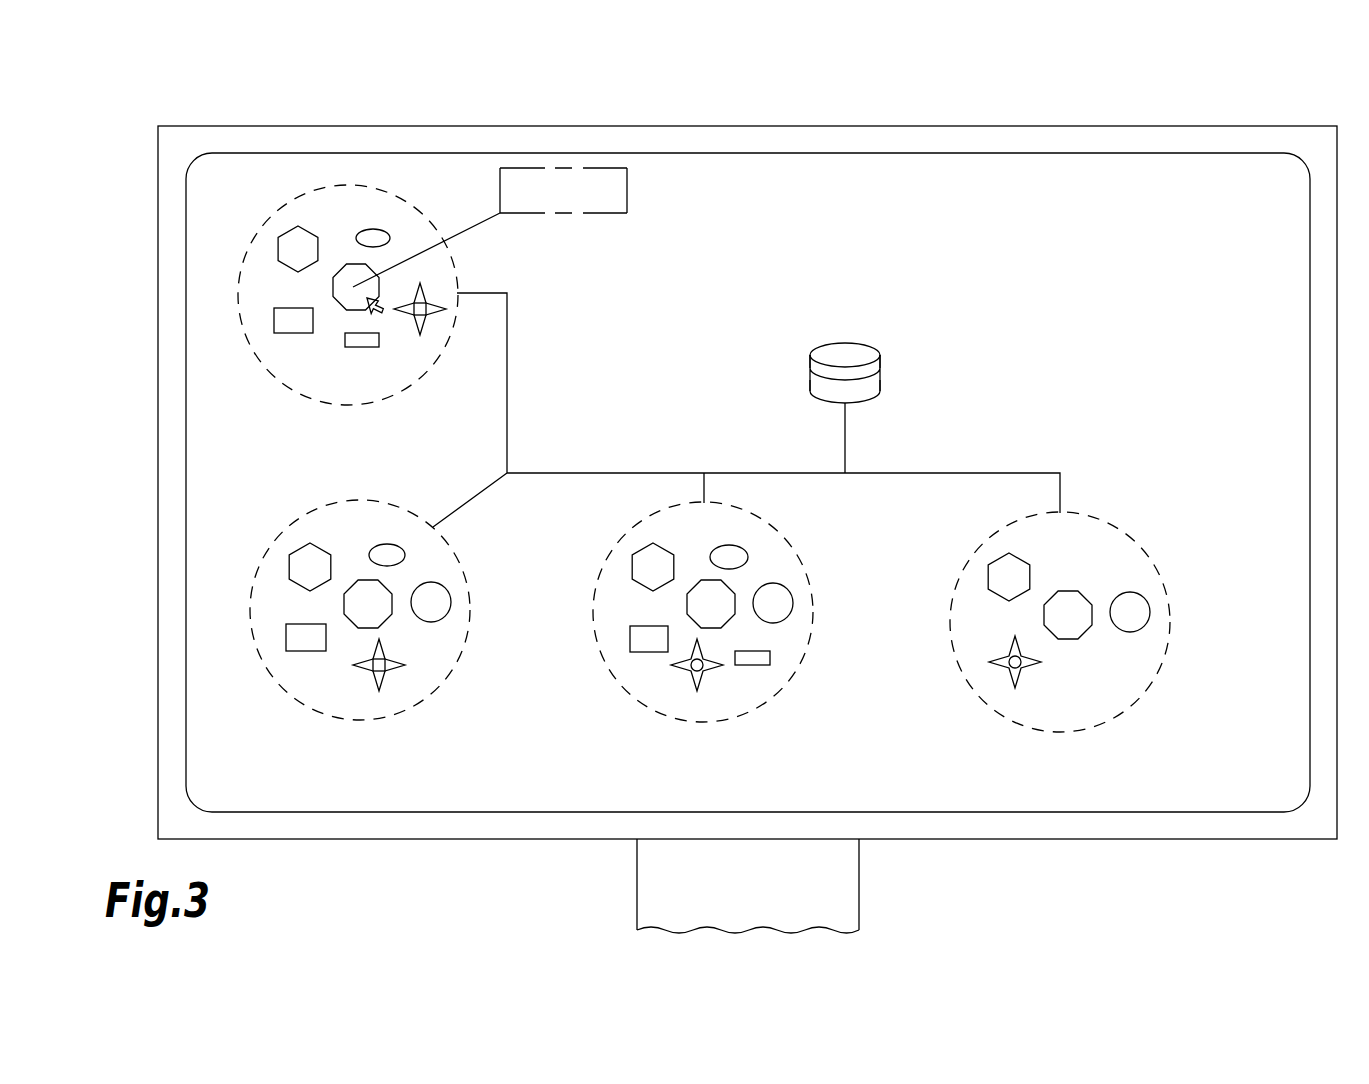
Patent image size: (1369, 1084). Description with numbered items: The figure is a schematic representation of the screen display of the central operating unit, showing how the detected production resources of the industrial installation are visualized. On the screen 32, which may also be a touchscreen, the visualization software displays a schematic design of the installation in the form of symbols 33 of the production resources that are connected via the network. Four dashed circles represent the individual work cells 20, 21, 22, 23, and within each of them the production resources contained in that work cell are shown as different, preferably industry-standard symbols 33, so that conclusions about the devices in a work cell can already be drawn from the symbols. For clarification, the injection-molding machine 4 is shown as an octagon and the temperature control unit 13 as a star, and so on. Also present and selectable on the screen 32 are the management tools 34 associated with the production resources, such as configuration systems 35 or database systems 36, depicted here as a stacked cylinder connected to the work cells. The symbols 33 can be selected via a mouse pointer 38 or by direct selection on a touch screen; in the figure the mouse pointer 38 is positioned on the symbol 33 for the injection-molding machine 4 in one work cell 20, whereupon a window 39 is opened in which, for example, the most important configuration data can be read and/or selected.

The injection-molding machine 4 is at (350, 287).
The temperature control unit 13 is at (427, 323).
The work cell 20 is at (263, 292).
The work cell 21 is at (328, 673).
The work cell 22 is at (727, 702).
The work cell 23 is at (1092, 548).
The screen 32 is at (703, 230).
The symbols 33 is at (237, 197).
The management tools 34 is at (887, 345).
The configuration systems 35 is at (857, 377).
The database systems 36 is at (858, 395).
The mouse pointer 38 is at (367, 298).
The window 39 is at (578, 187).